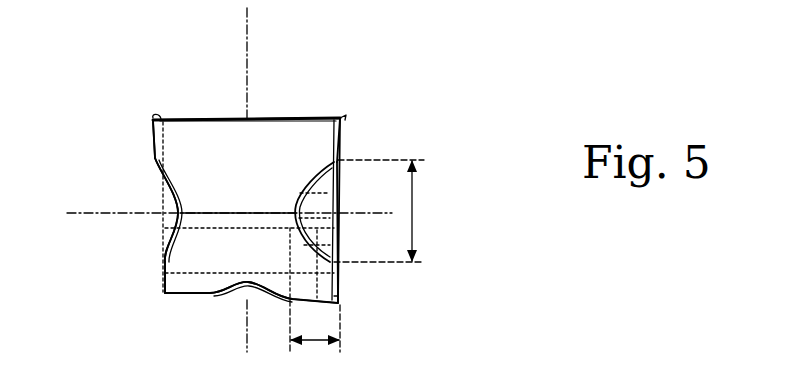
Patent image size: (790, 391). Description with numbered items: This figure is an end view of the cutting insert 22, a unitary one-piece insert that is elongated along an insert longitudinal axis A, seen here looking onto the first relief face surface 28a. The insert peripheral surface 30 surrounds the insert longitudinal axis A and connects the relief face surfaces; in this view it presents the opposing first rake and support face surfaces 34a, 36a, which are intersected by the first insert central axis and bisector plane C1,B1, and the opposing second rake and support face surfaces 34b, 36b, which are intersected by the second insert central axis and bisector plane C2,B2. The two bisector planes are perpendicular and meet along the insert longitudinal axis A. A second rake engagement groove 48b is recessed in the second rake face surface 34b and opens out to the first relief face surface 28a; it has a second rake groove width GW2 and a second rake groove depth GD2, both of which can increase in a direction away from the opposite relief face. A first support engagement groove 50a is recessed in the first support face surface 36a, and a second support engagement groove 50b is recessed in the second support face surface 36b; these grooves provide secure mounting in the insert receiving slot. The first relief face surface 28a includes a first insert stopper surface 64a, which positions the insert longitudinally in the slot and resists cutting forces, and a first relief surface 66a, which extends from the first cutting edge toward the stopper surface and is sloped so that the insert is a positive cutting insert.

The cutting insert 22 is at (366, 86).
The first relief face surface 28a is at (224, 130).
The insert peripheral surface 30 is at (150, 131).
The first rake face surface 34a is at (333, 56).
The second rake face surface 34b is at (360, 128).
The first support face surface 36a is at (190, 315).
The second support face surface 36b is at (146, 236).
The second rake engagement groove 48b is at (312, 215).
The first support engagement groove 50a is at (252, 292).
The second support engagement groove 50b is at (166, 200).
The first insert stopper surface 64a is at (250, 243).
The first relief surface 66a is at (250, 150).
The insert longitudinal axis A is at (255, 213).
The first insert central axis and first insert bisector plane C1,B1 is at (247, 40).
The second insert central axis and second insert bisector plane C2,B2 is at (85, 213).
The second rake groove width GW2 is at (417, 210).
The second rake groove depth GD2 is at (323, 342).